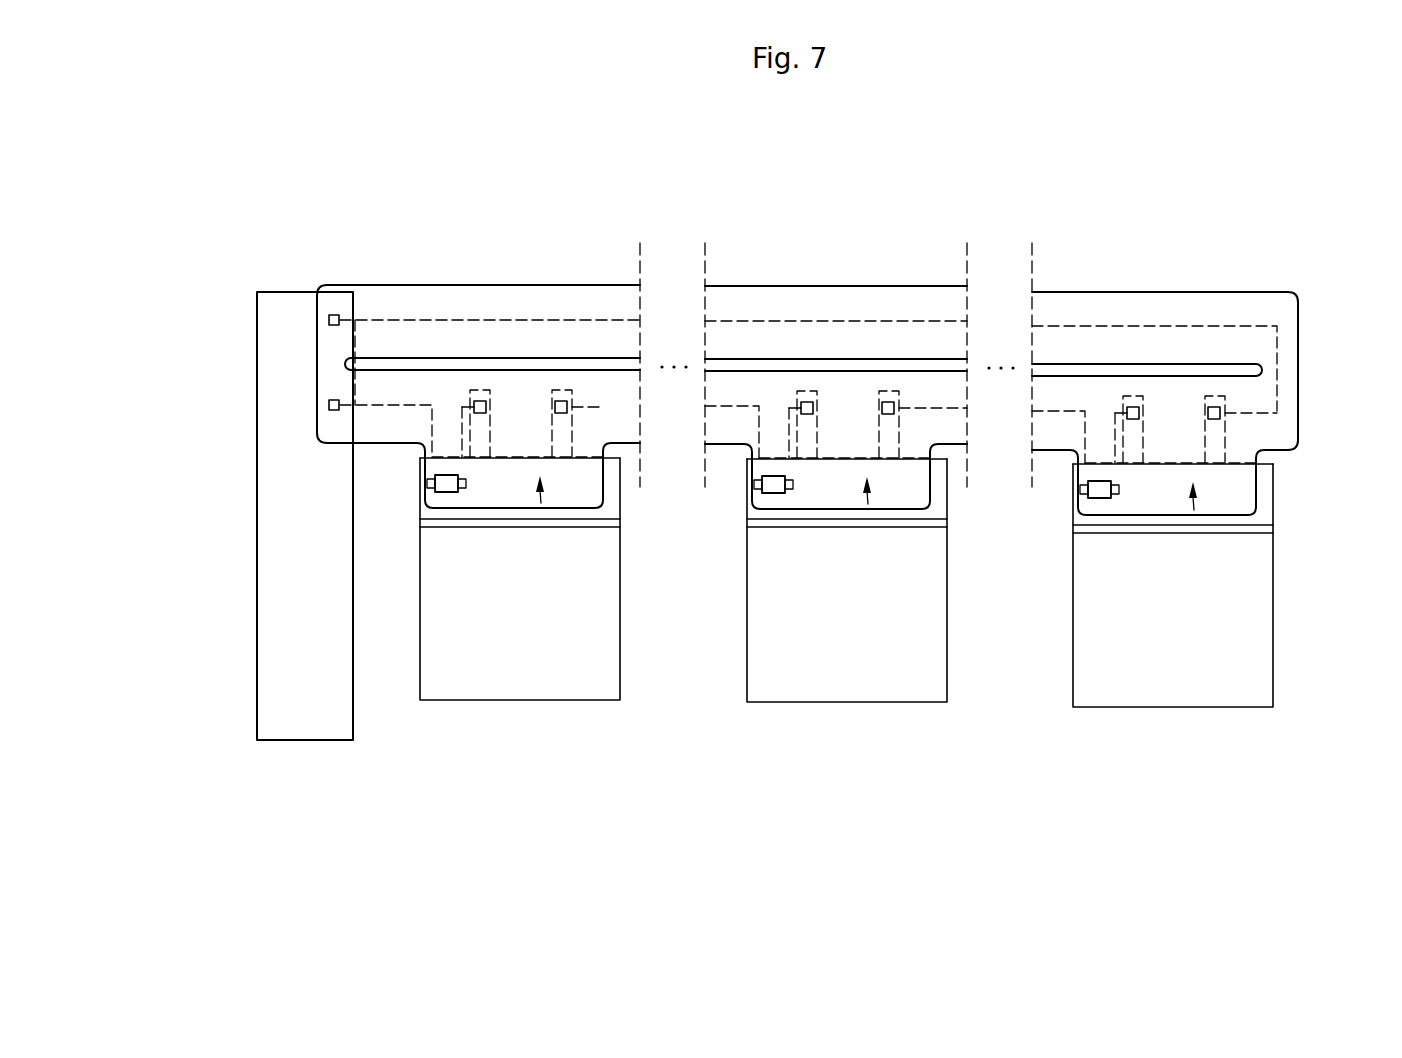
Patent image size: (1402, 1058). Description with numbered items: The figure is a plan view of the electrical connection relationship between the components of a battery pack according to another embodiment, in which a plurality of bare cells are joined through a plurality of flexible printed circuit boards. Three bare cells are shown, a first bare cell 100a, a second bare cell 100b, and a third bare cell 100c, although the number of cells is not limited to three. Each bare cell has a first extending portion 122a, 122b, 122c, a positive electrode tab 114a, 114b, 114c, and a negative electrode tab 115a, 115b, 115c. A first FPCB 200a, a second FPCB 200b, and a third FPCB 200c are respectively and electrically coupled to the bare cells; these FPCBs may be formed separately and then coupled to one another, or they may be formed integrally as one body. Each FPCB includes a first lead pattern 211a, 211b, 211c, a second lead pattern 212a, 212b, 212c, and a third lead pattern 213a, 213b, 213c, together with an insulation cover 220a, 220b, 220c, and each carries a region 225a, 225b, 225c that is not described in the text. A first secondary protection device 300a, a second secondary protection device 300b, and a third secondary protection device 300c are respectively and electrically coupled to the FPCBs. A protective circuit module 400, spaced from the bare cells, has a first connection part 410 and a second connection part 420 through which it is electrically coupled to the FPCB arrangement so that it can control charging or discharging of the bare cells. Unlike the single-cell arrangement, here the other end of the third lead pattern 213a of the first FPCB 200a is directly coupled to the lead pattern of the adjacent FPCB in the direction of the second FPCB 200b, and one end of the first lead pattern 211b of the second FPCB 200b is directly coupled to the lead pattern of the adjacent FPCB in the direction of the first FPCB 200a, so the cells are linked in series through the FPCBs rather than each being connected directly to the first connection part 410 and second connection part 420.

The protective circuit module 400 is at (304, 752).
The first connection part 410 is at (334, 400).
The second connection part 420 is at (334, 315).
The first FPCB 200a is at (514, 262).
The second FPCB 200b is at (840, 264).
The third FPCB 200c is at (1168, 268).
The insulation cover 220a is at (393, 305).
The insulation cover 220b is at (720, 300).
The insulation cover 220c is at (1045, 305).
The first lead pattern 211a is at (378, 410).
The first lead pattern 211b is at (735, 410).
The first lead pattern 211c is at (1062, 415).
The second lead pattern 212a is at (463, 467).
The second lead pattern 212b is at (790, 468).
The second lead pattern 212c is at (1117, 473).
The third lead pattern 213a is at (603, 405).
The third lead pattern 213b is at (930, 408).
The third lead pattern 213c is at (1260, 412).
The positive electrode tab 114a is at (560, 390).
The positive electrode tab 114b is at (888, 391).
The positive electrode tab 114c is at (1213, 396).
The negative electrode tab 115a is at (478, 390).
The negative electrode tab 115b is at (805, 391).
The negative electrode tab 115c is at (1131, 396).
The first secondary protection device 300a is at (445, 493).
The second secondary protection device 300b is at (772, 494).
The third secondary protection device 300c is at (1100, 499).
The sensing portion of circuit board 225a is at (540, 505).
The sensing portion of circuit board 225b is at (867, 506).
The sensing portion of circuit board 225c is at (1194, 511).
The first extending portion 122a is at (606, 498).
The first extending portion 122b is at (933, 499).
The first extending portion 122c is at (1262, 497).
The first bare cell 100a is at (513, 720).
The second bare cell 100b is at (847, 723).
The third bare cell 100c is at (1180, 726).